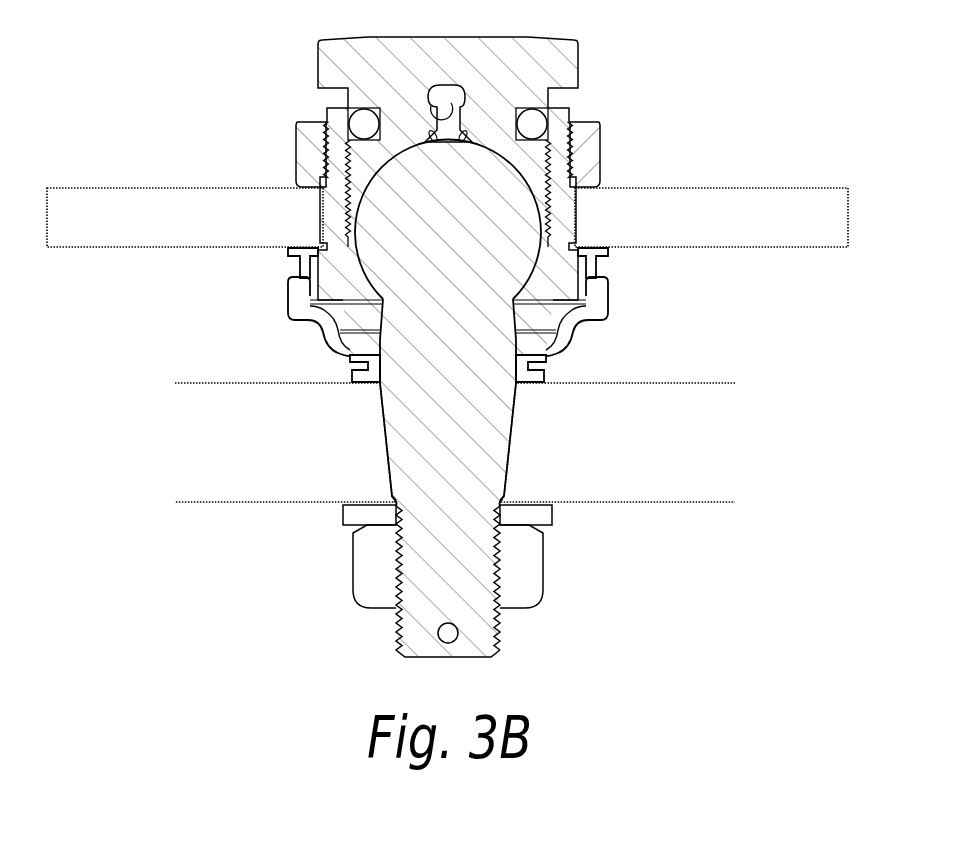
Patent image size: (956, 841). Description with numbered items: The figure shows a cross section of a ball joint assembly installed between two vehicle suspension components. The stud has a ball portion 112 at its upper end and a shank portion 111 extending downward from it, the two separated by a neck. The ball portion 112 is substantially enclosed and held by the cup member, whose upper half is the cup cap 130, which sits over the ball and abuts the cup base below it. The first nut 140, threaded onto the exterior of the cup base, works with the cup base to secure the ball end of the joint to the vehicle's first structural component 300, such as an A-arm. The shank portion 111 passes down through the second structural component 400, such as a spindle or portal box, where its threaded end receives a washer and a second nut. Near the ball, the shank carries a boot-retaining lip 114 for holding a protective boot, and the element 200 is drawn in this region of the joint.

The shank portion 111 is at (470, 443).
The ball portion 112 is at (487, 230).
The boot-retaining lip 114 is at (357, 330).
The cup cap 130 is at (535, 170).
The first nut 140 is at (297, 150).
The retaining ring 200 is at (562, 342).
The first structural component 300 is at (195, 231).
The second structural component 400 is at (273, 453).